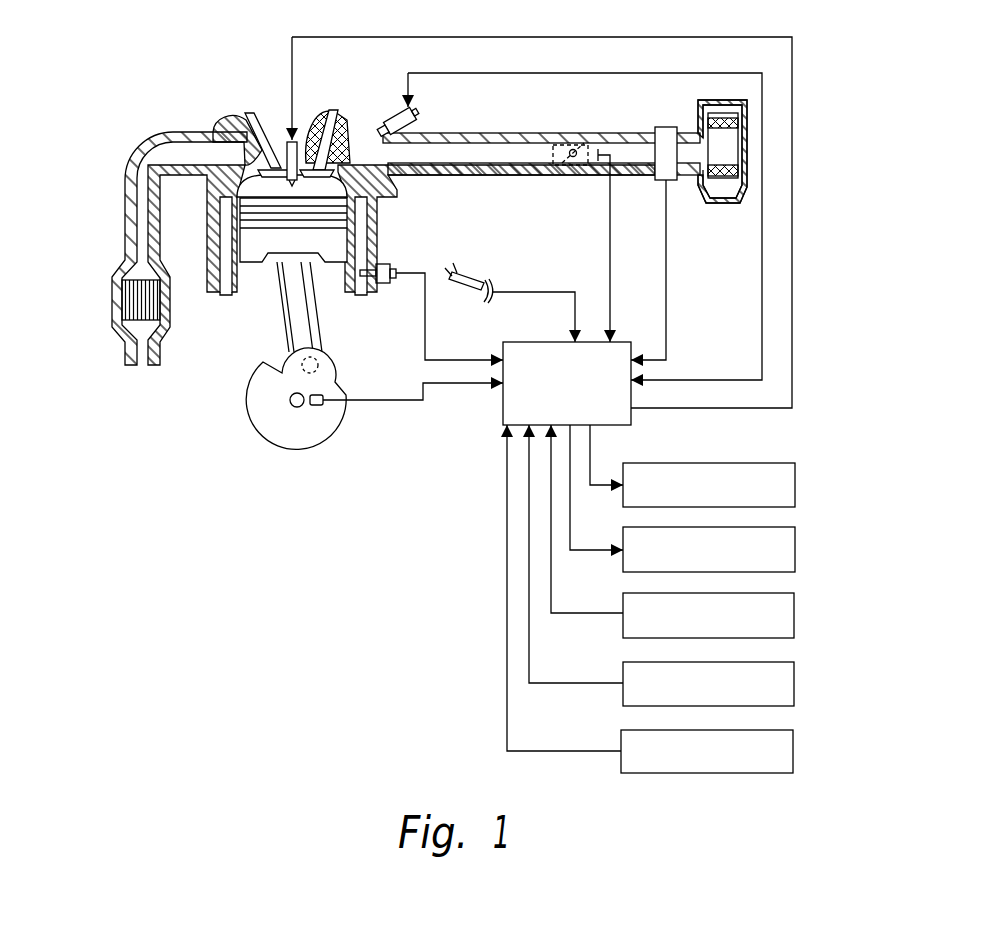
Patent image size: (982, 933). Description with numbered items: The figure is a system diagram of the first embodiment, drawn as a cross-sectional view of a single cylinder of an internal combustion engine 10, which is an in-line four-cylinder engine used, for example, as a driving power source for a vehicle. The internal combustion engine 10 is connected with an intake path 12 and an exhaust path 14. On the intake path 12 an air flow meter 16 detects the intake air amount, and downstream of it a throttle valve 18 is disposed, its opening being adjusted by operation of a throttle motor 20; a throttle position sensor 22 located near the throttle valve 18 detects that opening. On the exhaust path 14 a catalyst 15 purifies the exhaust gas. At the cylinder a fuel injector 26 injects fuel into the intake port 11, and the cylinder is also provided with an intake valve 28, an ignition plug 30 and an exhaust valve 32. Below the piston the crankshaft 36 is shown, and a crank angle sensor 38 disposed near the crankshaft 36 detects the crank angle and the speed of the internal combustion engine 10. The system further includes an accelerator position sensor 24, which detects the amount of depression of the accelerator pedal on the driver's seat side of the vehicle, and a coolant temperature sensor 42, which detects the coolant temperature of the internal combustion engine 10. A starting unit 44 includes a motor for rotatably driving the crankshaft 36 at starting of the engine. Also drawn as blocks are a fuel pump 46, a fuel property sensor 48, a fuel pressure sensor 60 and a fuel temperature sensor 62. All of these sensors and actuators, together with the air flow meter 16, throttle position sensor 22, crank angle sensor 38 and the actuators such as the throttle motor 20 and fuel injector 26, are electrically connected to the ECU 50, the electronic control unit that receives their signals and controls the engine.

The internal combustion engine 10 is at (392, 235).
The intake port 11 is at (372, 160).
The intake path 12 is at (504, 131).
The exhaust path 14 is at (118, 166).
The catalyst 15 is at (130, 300).
The air flow meter 16 is at (663, 128).
The throttle valve 18 is at (575, 150).
The throttle motor 20 is at (549, 175).
The throttle position sensor 22 is at (590, 158).
The accelerator position sensor 24 is at (500, 283).
The fuel injector 26 is at (413, 113).
The intake valve 28 is at (343, 117).
The ignition plug 30 is at (310, 123).
The exhaust valve 32 is at (213, 128).
The crankshaft 36 is at (293, 408).
The crank angle sensor 38 is at (318, 406).
The coolant temperature sensor 42 is at (386, 290).
The starting unit 44 is at (783, 462).
The fuel pump 46 is at (783, 526).
The fuel property sensor 48 is at (783, 592).
The ECU 50 is at (500, 408).
The fuel pressure sensor 60 is at (783, 661).
The fuel temperature sensor 62 is at (782, 729).